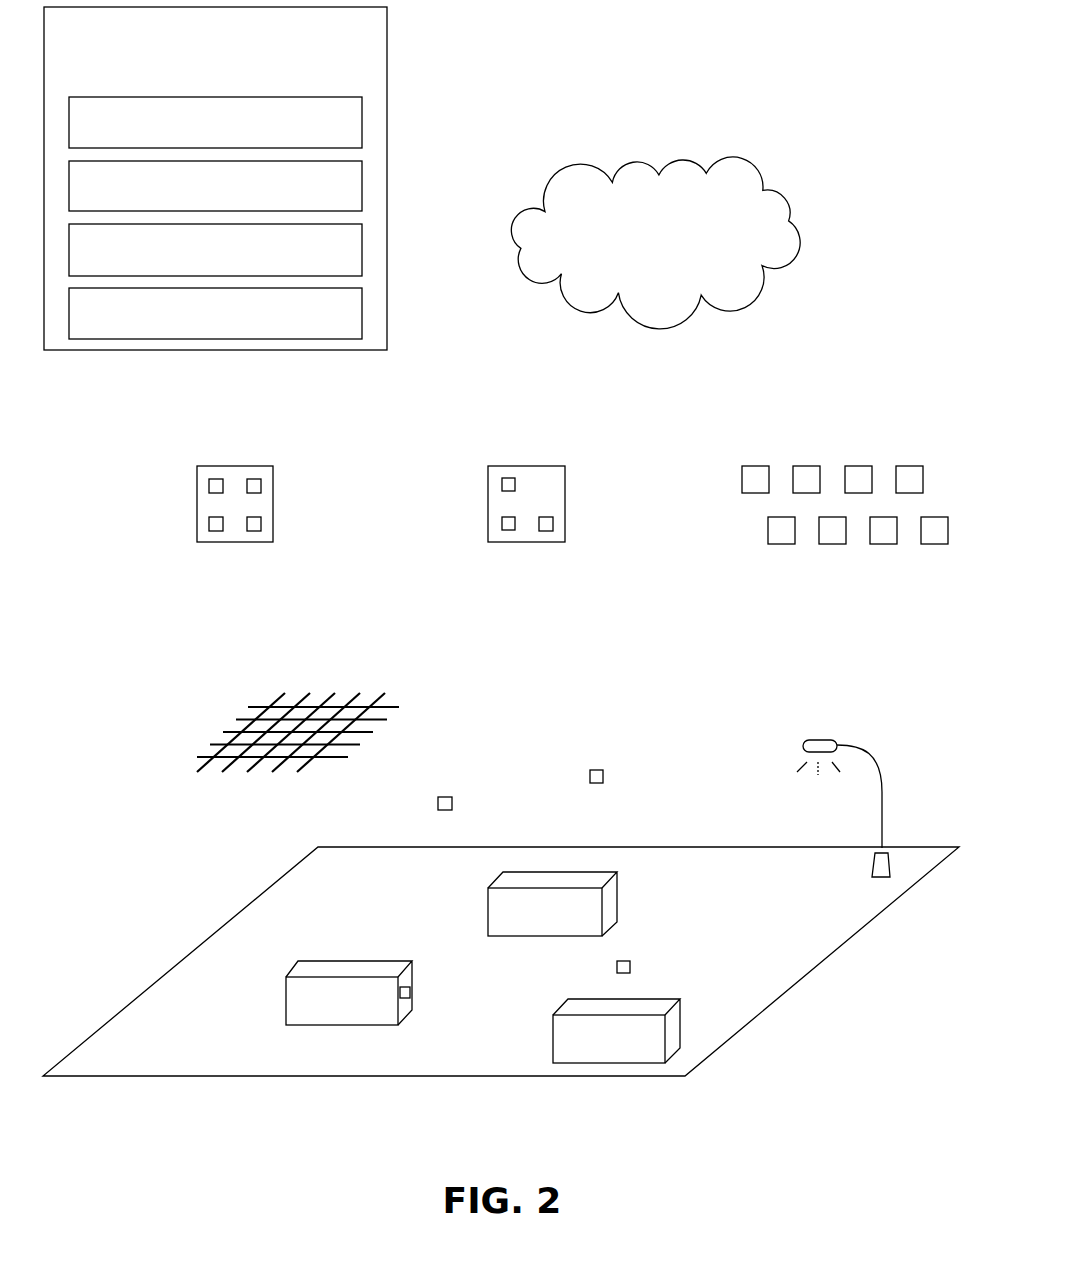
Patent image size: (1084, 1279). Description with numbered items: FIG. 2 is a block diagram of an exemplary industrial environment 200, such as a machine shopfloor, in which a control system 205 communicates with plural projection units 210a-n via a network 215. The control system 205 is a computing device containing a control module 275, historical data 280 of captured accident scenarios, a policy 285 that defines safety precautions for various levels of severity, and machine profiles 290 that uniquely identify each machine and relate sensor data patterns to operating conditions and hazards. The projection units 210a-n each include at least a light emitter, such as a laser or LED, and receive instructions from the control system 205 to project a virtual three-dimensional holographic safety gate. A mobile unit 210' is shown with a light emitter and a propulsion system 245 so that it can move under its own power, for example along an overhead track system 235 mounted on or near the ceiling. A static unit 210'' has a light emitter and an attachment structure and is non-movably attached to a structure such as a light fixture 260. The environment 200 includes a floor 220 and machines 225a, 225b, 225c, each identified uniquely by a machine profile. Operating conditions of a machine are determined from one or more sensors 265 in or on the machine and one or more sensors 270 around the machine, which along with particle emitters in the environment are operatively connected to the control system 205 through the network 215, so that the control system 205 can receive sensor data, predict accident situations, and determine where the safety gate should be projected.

The environment 200 is at (870, 128).
The control system 205 is at (235, 84).
The control module 275 is at (317, 135).
The historical data 280 is at (312, 199).
The policy 285 is at (269, 263).
The machine profiles 290 is at (324, 326).
The network 215 is at (663, 262).
The mobile unit 210' is at (221, 471).
The static unit 210'' is at (511, 471).
The projection units 210a-n is at (730, 452).
The propulsion system 245 is at (255, 477).
The track system 235 is at (236, 707).
The floor 220 is at (165, 1046).
The machine 225a is at (317, 1017).
The machine 225b is at (520, 926).
The machine 225c is at (583, 1054).
The sensor 265 is at (413, 992).
The sensor 270 is at (453, 798).
The light fixture 260 is at (867, 735).